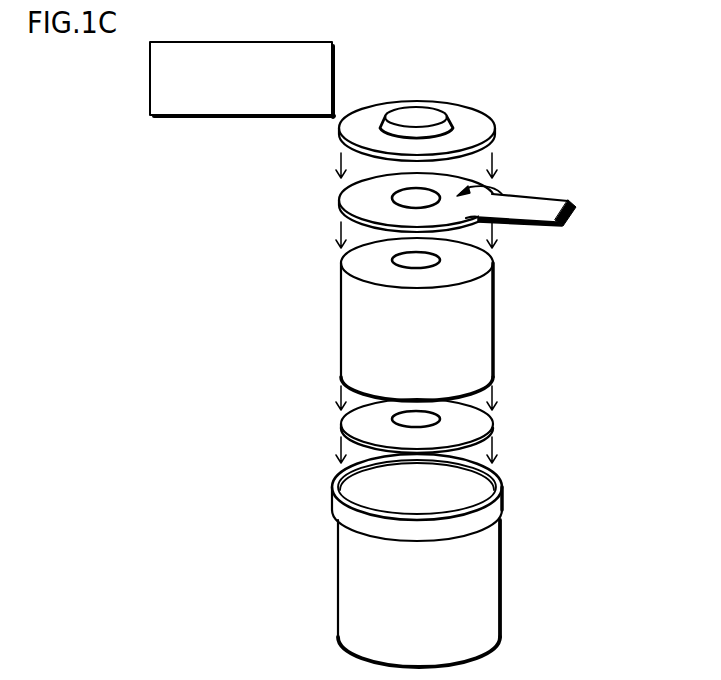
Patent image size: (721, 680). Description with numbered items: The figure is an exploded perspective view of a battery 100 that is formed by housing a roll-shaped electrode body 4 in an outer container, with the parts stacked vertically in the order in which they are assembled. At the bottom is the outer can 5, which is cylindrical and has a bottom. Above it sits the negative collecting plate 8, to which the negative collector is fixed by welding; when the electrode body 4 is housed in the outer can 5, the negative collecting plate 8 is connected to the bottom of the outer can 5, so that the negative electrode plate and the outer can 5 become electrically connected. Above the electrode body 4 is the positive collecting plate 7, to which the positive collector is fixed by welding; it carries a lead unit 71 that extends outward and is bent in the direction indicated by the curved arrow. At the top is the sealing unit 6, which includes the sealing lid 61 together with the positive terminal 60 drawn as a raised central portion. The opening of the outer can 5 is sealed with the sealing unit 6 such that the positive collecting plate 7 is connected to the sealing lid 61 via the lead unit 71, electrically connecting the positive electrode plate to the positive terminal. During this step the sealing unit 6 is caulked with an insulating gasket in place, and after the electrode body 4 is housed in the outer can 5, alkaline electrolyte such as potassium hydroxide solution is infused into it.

The battery 100 is at (248, 225).
The sealing unit 6 is at (566, 81).
The terminal cap 60 is at (433, 116).
The sealing lid 61 is at (487, 150).
The positive collecting plate 7 is at (488, 226).
The lead unit 71 is at (550, 207).
The electrode body 4 is at (518, 331).
The negative collecting plate 8 is at (477, 421).
The outer can 5 is at (503, 580).